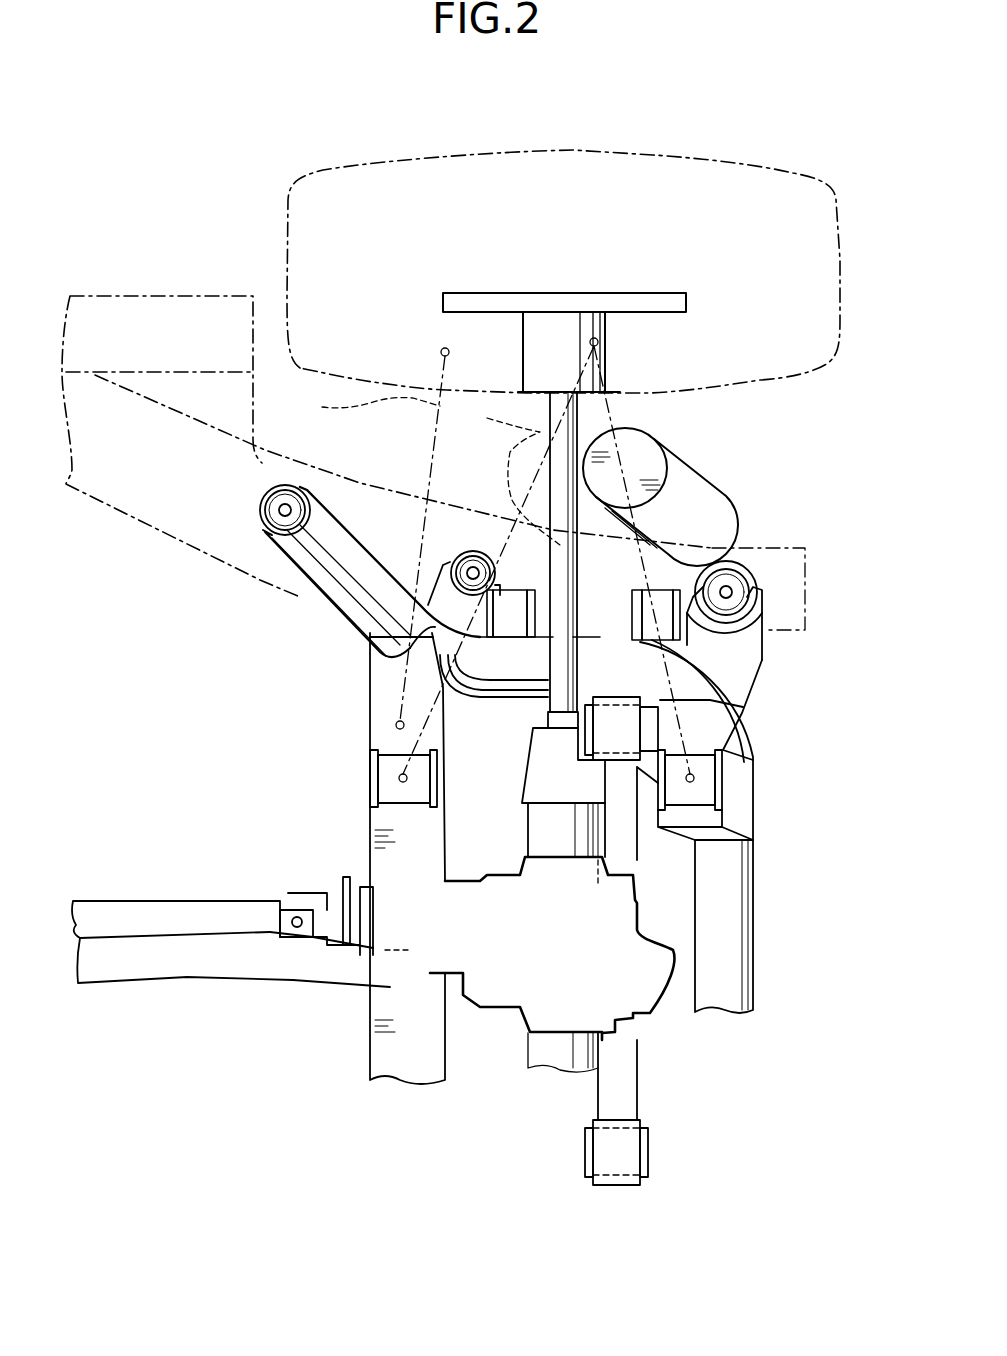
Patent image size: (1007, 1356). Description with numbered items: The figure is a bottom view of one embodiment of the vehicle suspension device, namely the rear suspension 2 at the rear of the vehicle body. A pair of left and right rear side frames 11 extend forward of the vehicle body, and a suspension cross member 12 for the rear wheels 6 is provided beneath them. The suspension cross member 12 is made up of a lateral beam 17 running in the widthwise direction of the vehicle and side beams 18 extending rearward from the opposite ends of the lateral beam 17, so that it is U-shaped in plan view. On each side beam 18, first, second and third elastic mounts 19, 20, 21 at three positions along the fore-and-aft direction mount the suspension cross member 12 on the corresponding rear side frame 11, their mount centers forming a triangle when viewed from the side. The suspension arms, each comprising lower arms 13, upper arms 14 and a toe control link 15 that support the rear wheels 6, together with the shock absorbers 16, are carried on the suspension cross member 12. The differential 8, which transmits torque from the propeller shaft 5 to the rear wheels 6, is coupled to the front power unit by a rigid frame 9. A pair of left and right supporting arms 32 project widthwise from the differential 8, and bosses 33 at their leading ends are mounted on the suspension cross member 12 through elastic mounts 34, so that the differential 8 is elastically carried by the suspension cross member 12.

The rear suspension 2 is at (768, 490).
The propeller shaft 5 is at (147, 900).
The rear wheels 6 is at (560, 150).
The differential 8 is at (512, 997).
The rigid frame 9 is at (197, 973).
The rear side frames 11 is at (143, 505).
The suspension cross member 12 is at (778, 840).
The lower arms 13 is at (605, 377).
The upper arms 14 is at (506, 472).
The toe control link 15 is at (362, 405).
The shock absorbers 16 is at (718, 490).
The lateral beam 17 is at (757, 927).
The side beams 18 is at (345, 610).
The first elastic mount 19 is at (272, 533).
The second elastic mount 20 is at (484, 551).
The third elastic mount 21 is at (747, 573).
The supporting arms 32 is at (620, 835).
The bosses 33 is at (632, 722).
The elastic mounts 34 is at (608, 740).